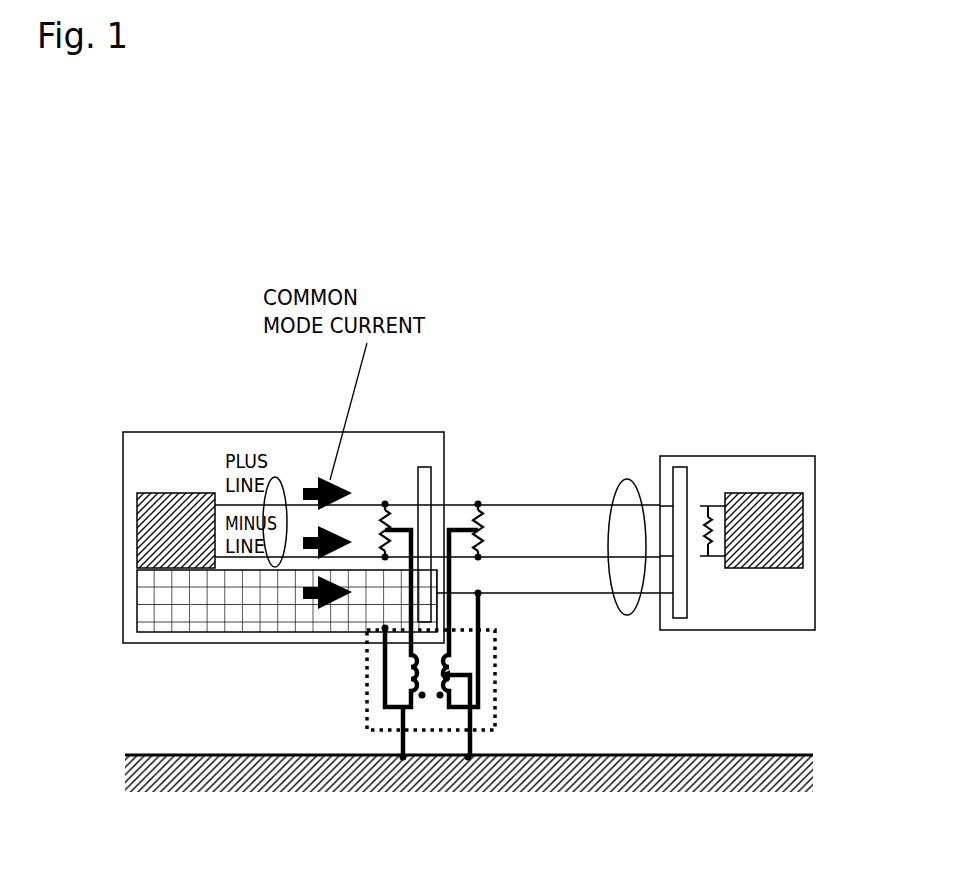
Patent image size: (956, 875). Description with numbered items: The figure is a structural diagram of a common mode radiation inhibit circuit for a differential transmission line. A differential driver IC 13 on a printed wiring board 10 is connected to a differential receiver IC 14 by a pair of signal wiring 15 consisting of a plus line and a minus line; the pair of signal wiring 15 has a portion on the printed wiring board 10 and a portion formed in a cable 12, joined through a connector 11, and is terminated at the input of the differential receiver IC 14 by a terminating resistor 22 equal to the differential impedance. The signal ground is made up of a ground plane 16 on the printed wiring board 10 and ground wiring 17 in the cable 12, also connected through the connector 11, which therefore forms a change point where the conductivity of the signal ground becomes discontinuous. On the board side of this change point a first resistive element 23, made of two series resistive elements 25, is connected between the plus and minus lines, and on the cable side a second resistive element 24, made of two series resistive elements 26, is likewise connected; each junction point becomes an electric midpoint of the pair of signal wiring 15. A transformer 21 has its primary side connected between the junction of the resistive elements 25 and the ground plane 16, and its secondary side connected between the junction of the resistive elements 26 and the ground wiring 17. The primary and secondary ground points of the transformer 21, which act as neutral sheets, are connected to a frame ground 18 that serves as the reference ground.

The printed wiring board 10 is at (417, 427).
The connector 11 is at (432, 467).
The cable 12 is at (613, 498).
The differential driver IC 13 is at (145, 493).
The differential receiver IC 14 is at (770, 493).
The pair of signal wiring 15 is at (275, 478).
The ground plane 16 is at (162, 632).
The ground wiring 17 is at (587, 593).
The frame ground 18 is at (725, 793).
The transformer 21 is at (470, 657).
The terminating resistor 22 is at (708, 518).
The first resistive element 23 is at (387, 496).
The second resistive element 24 is at (478, 557).
The resistive elements 25 is at (381, 537).
The resistive elements 26 is at (490, 522).